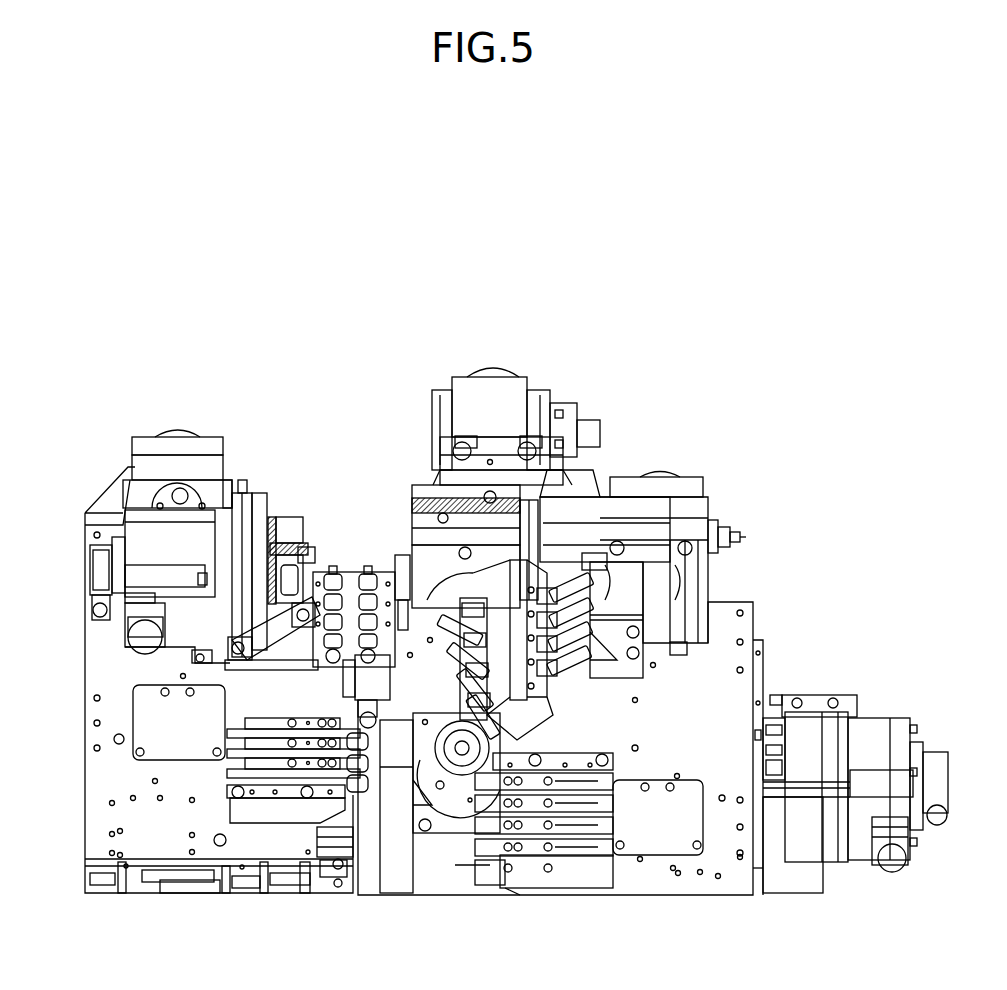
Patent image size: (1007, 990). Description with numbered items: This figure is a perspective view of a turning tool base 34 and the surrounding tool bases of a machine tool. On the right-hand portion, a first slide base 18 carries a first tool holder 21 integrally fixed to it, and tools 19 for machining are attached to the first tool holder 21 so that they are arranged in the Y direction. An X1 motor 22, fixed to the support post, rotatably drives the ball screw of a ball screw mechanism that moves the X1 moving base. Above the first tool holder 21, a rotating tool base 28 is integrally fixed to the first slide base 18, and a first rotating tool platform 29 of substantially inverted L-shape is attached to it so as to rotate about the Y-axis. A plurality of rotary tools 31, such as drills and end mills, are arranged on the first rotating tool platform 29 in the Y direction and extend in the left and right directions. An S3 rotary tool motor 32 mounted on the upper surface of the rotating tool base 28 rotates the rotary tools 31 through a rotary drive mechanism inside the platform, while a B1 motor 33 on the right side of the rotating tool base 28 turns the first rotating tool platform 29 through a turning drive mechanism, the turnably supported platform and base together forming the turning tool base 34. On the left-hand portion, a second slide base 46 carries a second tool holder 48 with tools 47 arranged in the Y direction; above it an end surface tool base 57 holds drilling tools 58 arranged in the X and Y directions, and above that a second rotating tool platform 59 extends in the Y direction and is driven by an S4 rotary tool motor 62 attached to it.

The first slide base 18 is at (728, 637).
The tools 19 is at (490, 837).
The first tool holder 21 is at (598, 853).
The X1 motor 22 is at (873, 745).
The rotating tool base 28 is at (422, 490).
The first rotating tool platform 29 is at (500, 587).
The rotary tools 31 is at (457, 665).
The S3 rotary tool motor 32 is at (512, 385).
The B1 motor 33 is at (640, 512).
The turning tool base 34 is at (408, 558).
The second slide base 46 is at (152, 838).
The tools 47 is at (268, 737).
The second tool holder 48 is at (300, 815).
The end surface tool base 57 is at (380, 567).
The drilling tools 58 is at (285, 563).
The second rotating tool platform 59 is at (258, 505).
The S4 rotary tool motor 62 is at (153, 543).